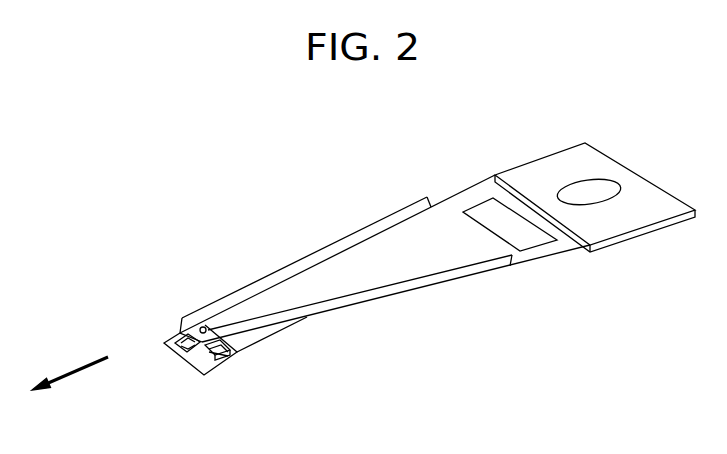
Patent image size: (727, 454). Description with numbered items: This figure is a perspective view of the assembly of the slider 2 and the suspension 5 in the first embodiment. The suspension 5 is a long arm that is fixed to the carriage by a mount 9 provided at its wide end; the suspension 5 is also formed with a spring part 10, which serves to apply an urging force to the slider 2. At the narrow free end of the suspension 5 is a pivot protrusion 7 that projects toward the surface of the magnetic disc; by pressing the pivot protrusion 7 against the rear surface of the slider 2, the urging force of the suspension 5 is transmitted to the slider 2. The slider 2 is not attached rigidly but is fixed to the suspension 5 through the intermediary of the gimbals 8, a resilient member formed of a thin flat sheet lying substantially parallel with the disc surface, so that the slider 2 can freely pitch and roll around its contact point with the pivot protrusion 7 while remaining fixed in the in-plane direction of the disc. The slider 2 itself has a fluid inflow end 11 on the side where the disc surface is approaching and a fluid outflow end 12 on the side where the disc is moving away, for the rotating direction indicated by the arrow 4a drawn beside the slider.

The slider 2 is at (210, 371).
The arrow 4a is at (82, 365).
The suspension 5 is at (393, 247).
The pivot protrusion 7 is at (201, 318).
The gimbals 8 is at (255, 342).
The mount 9 is at (556, 172).
The spring part 10 is at (549, 250).
The fluid inflow end 11 is at (231, 357).
The fluid outflow end 12 is at (187, 360).